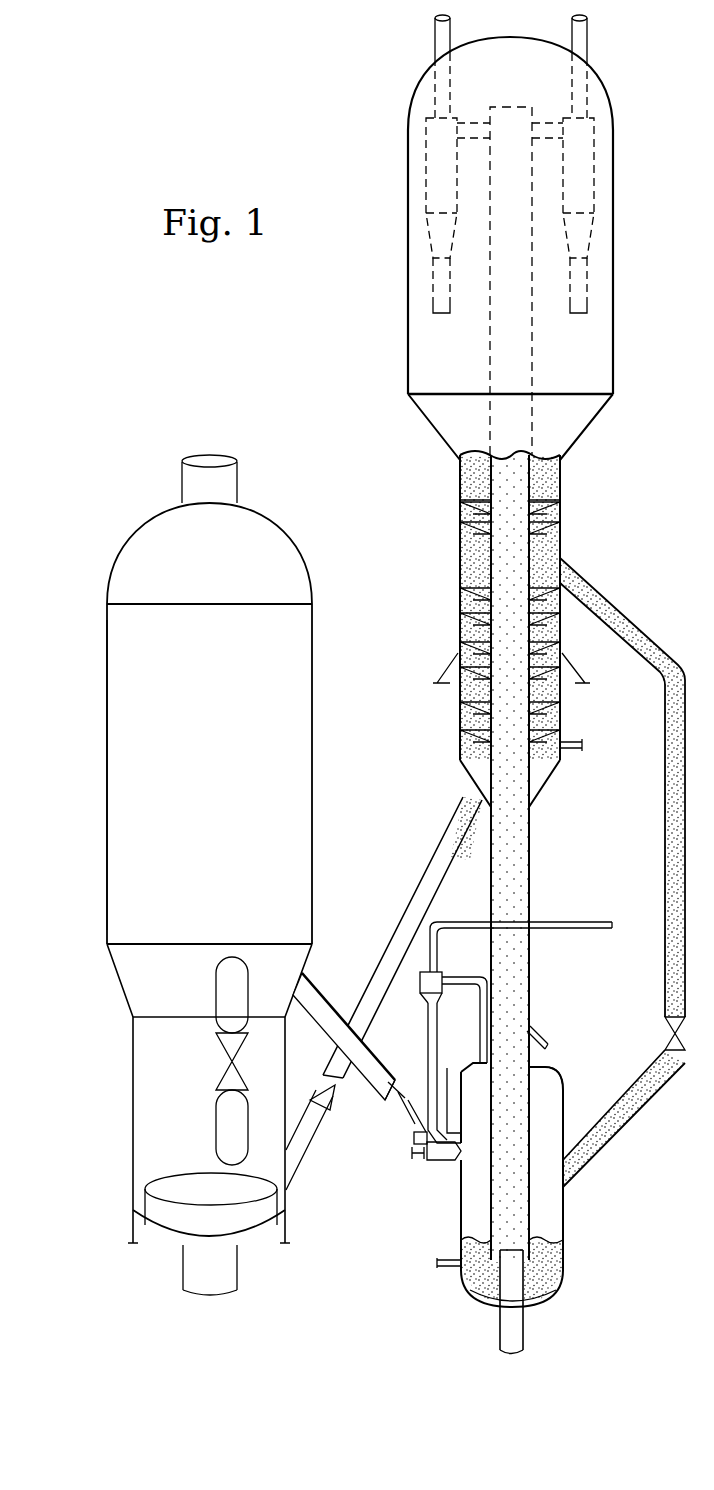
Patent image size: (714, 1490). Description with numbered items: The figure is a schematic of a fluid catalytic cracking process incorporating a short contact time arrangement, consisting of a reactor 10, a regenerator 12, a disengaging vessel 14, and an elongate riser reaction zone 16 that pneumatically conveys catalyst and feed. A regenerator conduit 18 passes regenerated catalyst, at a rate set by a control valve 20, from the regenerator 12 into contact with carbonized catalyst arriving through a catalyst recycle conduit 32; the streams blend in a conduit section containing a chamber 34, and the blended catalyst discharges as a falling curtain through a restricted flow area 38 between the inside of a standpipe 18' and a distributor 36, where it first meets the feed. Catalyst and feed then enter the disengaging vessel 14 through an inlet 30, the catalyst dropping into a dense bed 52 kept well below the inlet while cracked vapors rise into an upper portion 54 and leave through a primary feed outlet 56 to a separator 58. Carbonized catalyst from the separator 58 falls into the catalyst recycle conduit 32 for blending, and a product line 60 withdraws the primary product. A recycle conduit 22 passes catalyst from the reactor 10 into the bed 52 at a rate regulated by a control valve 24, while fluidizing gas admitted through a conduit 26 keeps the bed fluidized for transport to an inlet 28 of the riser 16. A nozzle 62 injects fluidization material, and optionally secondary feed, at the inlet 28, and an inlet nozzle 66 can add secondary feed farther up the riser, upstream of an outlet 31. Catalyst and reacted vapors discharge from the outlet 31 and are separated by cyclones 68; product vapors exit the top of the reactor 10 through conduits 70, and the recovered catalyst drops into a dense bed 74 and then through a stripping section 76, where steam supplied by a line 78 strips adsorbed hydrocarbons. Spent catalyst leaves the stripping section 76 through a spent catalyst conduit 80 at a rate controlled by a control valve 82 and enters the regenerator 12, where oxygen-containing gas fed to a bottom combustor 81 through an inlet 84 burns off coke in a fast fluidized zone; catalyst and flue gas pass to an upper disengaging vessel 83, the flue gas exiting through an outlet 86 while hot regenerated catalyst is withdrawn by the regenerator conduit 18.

The reactor 10 is at (618, 150).
The regenerator 12 is at (96, 857).
The disengaging vessel 14 is at (568, 1200).
The elongate riser reaction zone 16 is at (532, 986).
The regenerator conduit 18 is at (344, 1027).
The standpipe 18' is at (456, 1086).
The control valve 20 is at (392, 1112).
The recycle conduit 22 is at (664, 890).
The control valve 24 is at (665, 1032).
The conduit 26 is at (445, 1268).
The inlet 28 is at (560, 1290).
The inlet 30 is at (452, 1162).
The outlet 31 is at (533, 107).
The catalyst recycle conduit 32 is at (405, 1090).
The chamber 34 is at (410, 1130).
The distributor 36 is at (425, 1160).
The restricted flow area 38 is at (410, 1155).
The dense bed 52 is at (565, 1243).
The upper portion 54 is at (545, 1097).
The primary feed outlet 56 is at (442, 990).
The separator 58 is at (420, 985).
The product line 60 is at (550, 922).
The nozzle 62 is at (525, 1342).
The inlet nozzle 66 is at (540, 1036).
The cyclones 68 is at (440, 153).
The conduits 70 is at (435, 47).
The dense bed 74 is at (545, 482).
The stripping section 76 is at (470, 570).
The line 78 is at (575, 751).
The spent catalyst conduit 80 is at (425, 870).
The bottom combustor 81 is at (133, 1103).
The control valve 82 is at (330, 1080).
The upper disengaging vessel 83 is at (100, 763).
The inlet 84 is at (183, 1265).
The outlet 86 is at (182, 480).